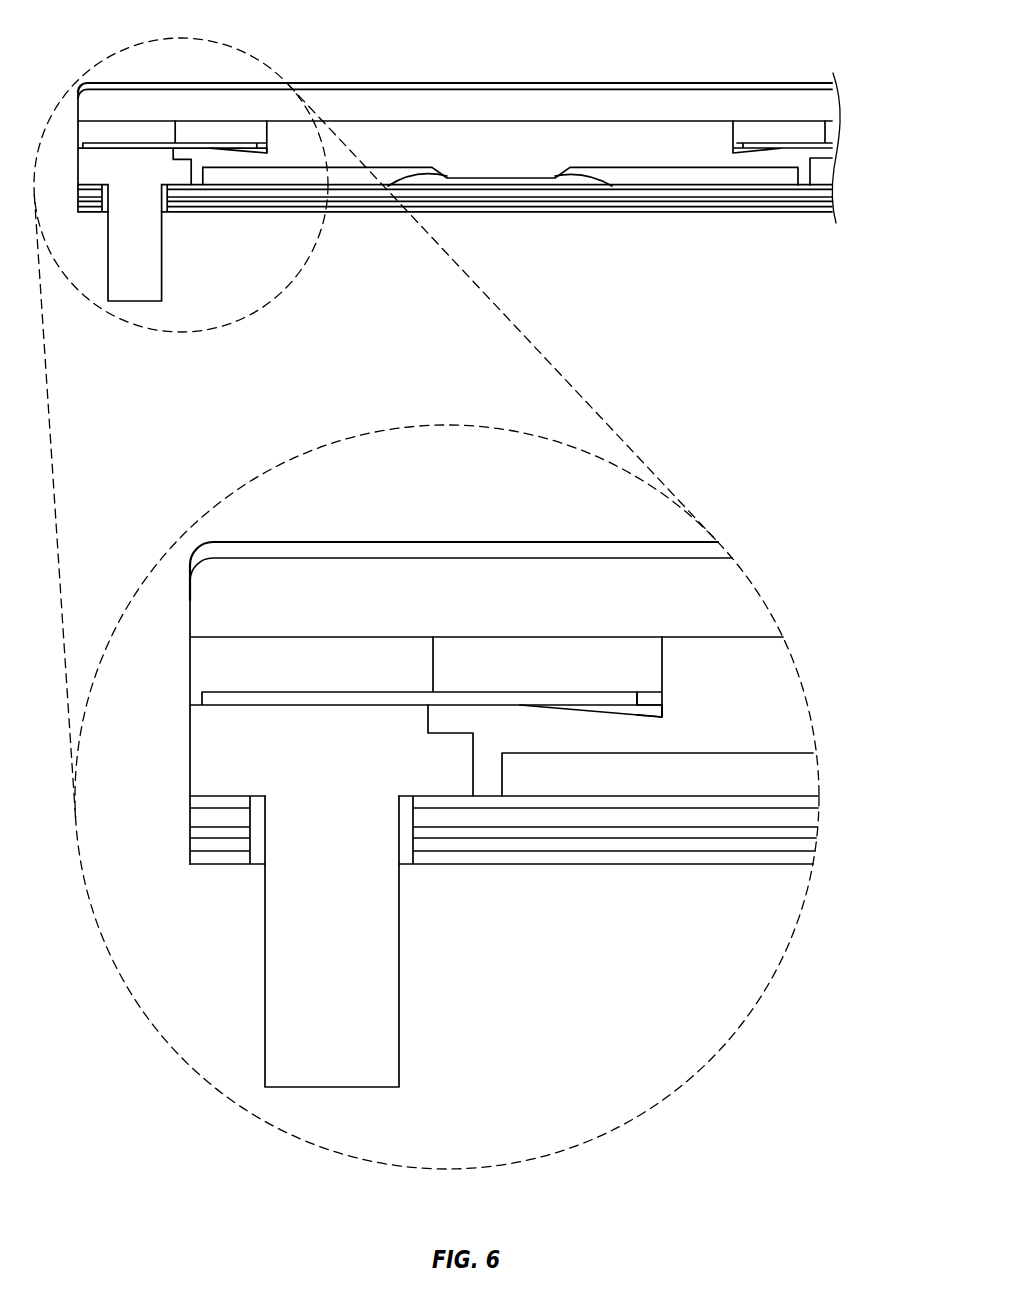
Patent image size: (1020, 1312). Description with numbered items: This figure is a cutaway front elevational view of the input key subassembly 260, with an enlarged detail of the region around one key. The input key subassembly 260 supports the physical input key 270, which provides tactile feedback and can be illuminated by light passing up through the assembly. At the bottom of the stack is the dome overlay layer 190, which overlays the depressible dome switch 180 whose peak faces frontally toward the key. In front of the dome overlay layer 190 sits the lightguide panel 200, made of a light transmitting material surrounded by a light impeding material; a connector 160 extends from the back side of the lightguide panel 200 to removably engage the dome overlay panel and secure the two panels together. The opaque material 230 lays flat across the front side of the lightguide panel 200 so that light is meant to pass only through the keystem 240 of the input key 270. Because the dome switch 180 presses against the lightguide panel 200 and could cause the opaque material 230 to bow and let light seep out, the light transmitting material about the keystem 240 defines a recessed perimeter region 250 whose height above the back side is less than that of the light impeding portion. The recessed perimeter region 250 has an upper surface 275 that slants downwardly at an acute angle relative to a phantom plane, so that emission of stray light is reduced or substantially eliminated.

The connector 160 is at (381, 921).
The dome switch 180 is at (576, 180).
The dome overlay layer 190 is at (838, 222).
The lightguide panel 200 is at (187, 798).
The opaque material 230 is at (226, 697).
The keystem 240 is at (473, 140).
The recessed perimeter region 250 is at (648, 710).
The input key subassembly 260 is at (702, 45).
The input key 270 is at (207, 602).
The upper surface 275 is at (595, 716).